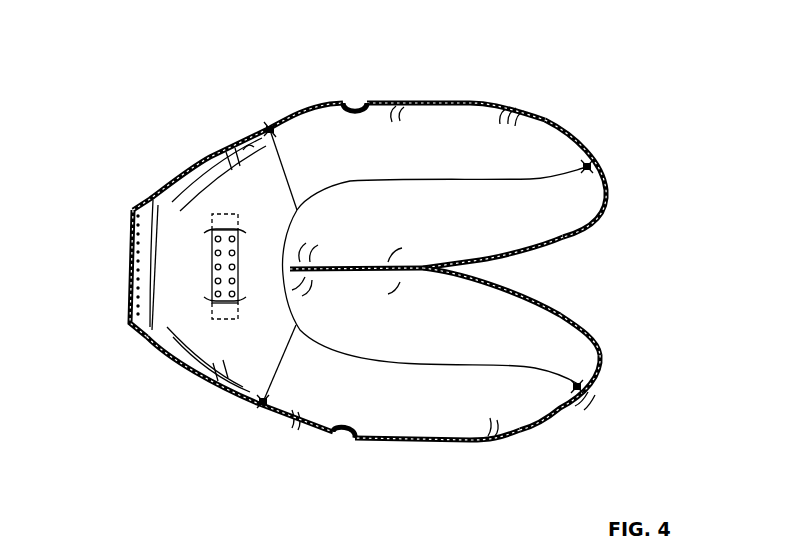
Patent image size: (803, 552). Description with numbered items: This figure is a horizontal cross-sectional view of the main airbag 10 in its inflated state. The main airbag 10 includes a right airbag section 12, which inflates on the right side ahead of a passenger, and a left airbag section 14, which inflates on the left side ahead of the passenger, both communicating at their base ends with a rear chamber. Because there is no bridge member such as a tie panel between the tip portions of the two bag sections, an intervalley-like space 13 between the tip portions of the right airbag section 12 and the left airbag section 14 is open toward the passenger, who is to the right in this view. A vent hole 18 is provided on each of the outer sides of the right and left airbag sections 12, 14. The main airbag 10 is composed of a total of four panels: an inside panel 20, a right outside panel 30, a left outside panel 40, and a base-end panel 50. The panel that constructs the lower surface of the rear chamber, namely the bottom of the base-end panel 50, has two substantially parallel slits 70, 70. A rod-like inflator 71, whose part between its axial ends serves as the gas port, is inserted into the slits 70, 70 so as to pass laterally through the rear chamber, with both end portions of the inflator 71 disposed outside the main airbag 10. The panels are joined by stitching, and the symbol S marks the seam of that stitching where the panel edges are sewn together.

The main airbag 10 is at (625, 170).
The right airbag section 12 is at (572, 114).
The intervalley-like space 13 is at (527, 273).
The left airbag section 14 is at (613, 373).
The vent hole 18 is at (357, 467).
The inside panel 20 is at (592, 327).
The right outside panel 30 is at (479, 101).
The left outside panel 40 is at (528, 440).
The base-end panel 50 is at (190, 377).
The slit 70 is at (234, 222).
The inflator 71 is at (212, 274).
The seam S is at (584, 166).